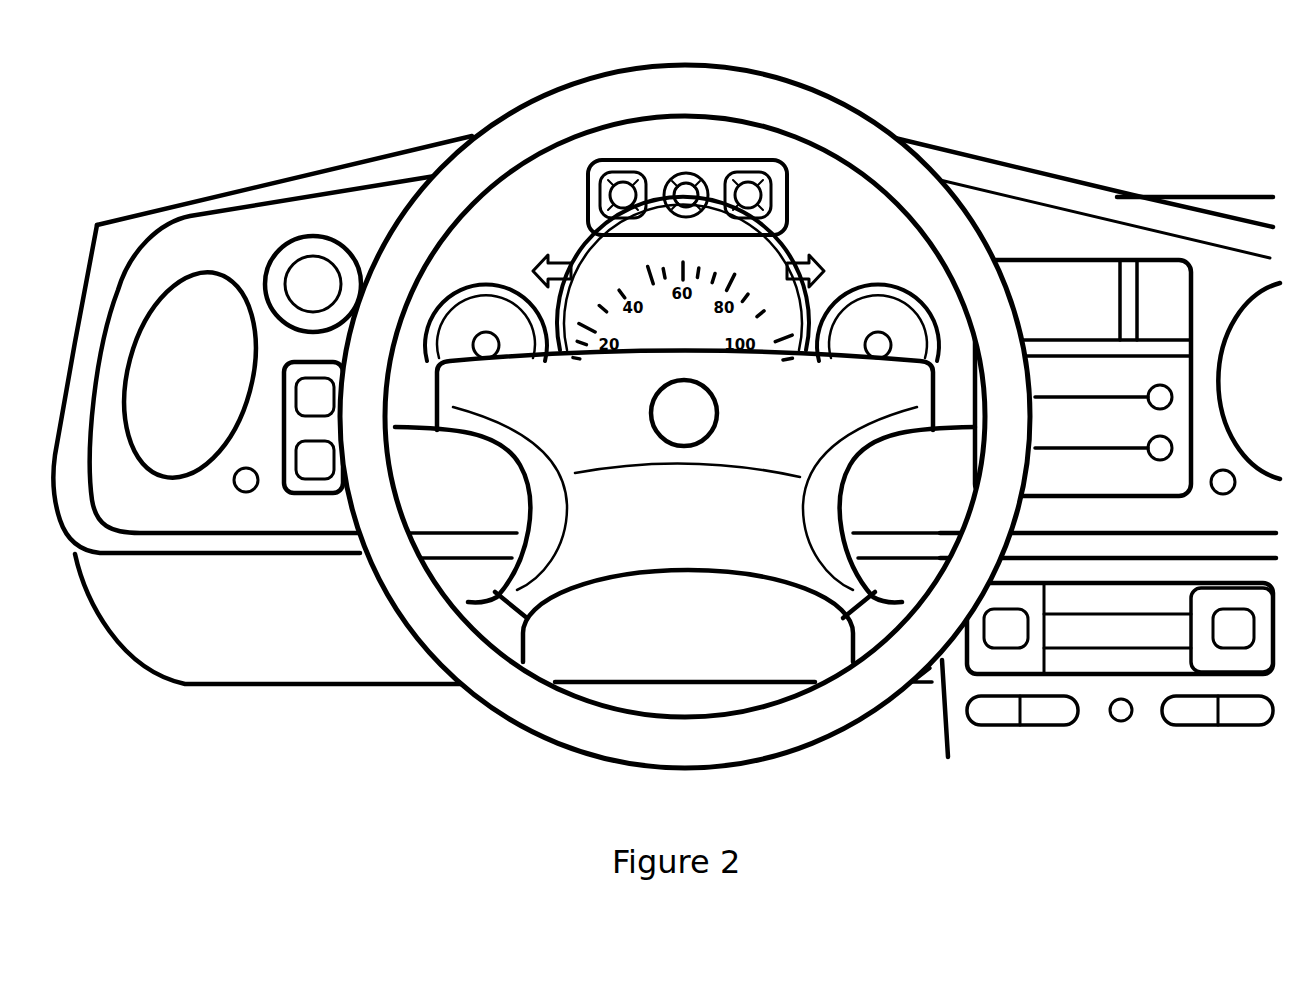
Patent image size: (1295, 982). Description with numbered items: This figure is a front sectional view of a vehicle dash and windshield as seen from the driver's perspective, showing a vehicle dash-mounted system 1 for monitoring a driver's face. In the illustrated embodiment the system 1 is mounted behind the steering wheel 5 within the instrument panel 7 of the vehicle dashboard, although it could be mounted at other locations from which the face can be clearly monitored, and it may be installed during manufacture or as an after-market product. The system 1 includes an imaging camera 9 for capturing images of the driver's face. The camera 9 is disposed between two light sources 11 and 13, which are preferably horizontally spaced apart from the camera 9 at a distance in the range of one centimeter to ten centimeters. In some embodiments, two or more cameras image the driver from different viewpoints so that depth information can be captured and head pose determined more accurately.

The vehicle dash-mounted system 1 is at (692, 152).
The steering wheel 5 is at (789, 95).
The instrument panel 7 is at (1020, 253).
The imaging camera 9 is at (686, 192).
The light source 11 is at (598, 205).
The light source 13 is at (772, 207).